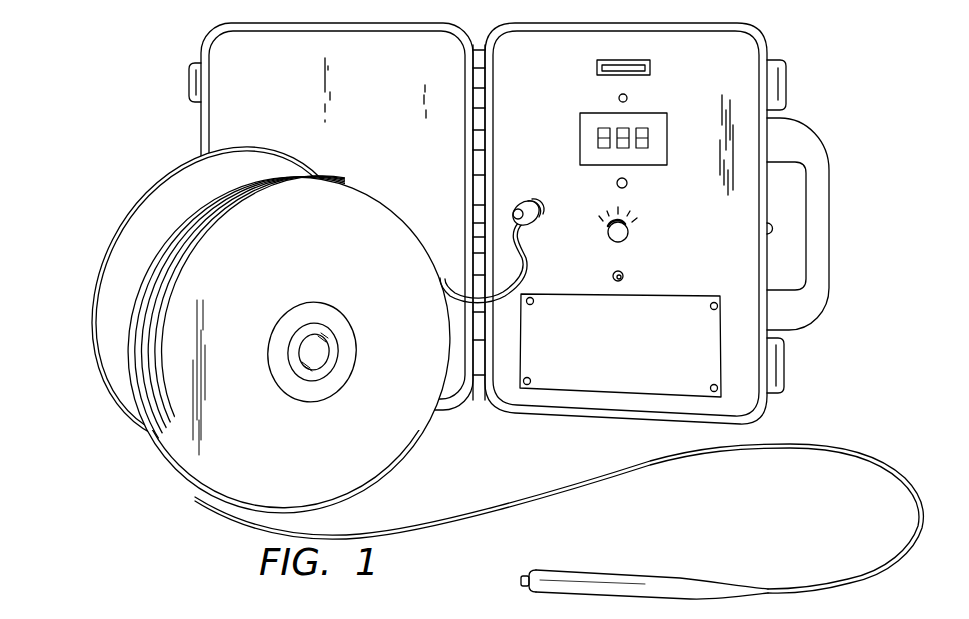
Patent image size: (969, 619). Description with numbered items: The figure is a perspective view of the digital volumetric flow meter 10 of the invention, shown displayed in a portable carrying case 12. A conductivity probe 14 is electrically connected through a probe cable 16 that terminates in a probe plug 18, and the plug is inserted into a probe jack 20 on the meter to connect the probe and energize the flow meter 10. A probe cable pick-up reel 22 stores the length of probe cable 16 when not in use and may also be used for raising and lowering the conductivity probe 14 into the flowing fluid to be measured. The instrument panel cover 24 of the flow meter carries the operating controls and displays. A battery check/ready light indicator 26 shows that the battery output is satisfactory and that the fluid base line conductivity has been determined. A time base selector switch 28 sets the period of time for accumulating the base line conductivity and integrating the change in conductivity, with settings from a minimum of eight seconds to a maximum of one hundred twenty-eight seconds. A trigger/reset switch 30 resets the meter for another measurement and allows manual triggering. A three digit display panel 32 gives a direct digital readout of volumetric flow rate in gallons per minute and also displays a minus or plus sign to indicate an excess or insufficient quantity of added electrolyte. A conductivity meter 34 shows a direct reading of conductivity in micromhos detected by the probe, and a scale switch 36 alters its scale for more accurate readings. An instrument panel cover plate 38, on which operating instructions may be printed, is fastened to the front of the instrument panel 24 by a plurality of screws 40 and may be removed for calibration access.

The digital volumetric flow meter 10 is at (106, 104).
The portable carrying case 12 is at (775, 69).
The conductivity probe 14 is at (628, 586).
The probe cable 16 is at (820, 449).
The probe plug 18 is at (513, 206).
The probe jack 20 is at (535, 207).
The probe cable pick-up reel 22 is at (293, 259).
The instrument panel cover 24 is at (746, 196).
The battery check/ready light indicator 26 is at (628, 183).
The time base selector switch 28 is at (629, 234).
The trigger/reset switch 30 is at (622, 271).
The three digit display panel 32 is at (660, 113).
The conductivity meter 34 is at (651, 66).
The scale switch 36 is at (618, 98).
The instrument panel cover plate 38 is at (650, 349).
The screws 40 is at (717, 303).